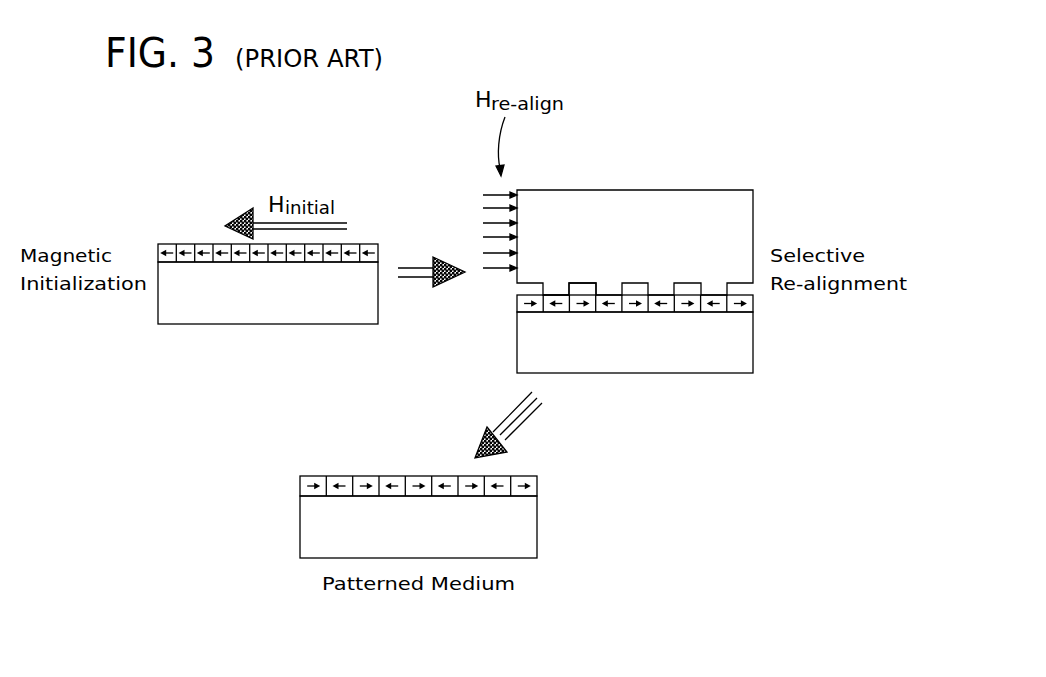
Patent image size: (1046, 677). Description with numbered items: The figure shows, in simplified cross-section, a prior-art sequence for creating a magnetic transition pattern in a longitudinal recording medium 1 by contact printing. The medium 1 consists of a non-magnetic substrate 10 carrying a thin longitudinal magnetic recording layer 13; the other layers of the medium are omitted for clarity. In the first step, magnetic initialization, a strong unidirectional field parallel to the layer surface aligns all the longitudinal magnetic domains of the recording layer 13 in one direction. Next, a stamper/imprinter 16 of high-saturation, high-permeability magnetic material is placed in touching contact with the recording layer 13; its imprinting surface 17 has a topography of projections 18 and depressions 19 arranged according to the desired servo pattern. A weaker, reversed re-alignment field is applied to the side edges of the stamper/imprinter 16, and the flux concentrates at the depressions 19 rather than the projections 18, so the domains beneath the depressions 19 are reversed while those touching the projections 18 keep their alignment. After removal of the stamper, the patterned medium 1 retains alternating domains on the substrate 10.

The longitudinal recording medium 1 is at (443, 382).
The non-magnetic substrate 10 is at (282, 298).
The magnetic recording layer 13 is at (369, 245).
The stamper/imprinter 16 is at (764, 196).
The imprinting surface 17 is at (497, 284).
The projections 18 is at (555, 294).
The depressions 19 is at (588, 293).